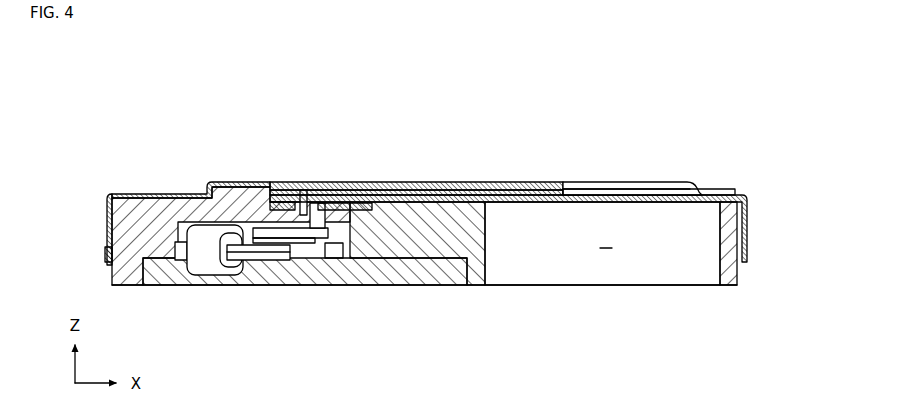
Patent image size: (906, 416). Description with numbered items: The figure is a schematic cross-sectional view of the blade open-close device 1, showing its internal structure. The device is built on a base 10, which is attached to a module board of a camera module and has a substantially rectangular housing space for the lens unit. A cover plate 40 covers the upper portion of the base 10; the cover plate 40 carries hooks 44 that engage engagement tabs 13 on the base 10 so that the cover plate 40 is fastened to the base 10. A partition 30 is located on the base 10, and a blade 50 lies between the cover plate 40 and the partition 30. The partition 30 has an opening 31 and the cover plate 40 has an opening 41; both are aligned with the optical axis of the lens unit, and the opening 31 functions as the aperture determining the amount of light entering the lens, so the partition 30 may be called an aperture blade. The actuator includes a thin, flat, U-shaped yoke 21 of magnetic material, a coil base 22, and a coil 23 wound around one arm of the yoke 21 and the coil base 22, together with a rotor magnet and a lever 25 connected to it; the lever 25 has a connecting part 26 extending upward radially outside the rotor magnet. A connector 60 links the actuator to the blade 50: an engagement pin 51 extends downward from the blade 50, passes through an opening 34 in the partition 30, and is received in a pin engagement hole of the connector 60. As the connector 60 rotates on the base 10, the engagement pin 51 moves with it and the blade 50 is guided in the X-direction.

The blade open-close device 1 is at (712, 108).
The base 10 is at (130, 285).
The engagement tab 13 is at (107, 228).
The yoke 21 is at (282, 256).
The coil base 22 is at (413, 278).
The coil 23 is at (202, 266).
The lever 25 is at (265, 232).
The connecting part 26 is at (322, 218).
The partition 30 is at (392, 188).
The opening 31 is at (618, 195).
The opening 34 is at (318, 197).
The cover plate 40 is at (148, 194).
The opening 41 is at (598, 182).
The hook 44 is at (107, 262).
The blade 50 is at (450, 190).
The engagement pin 51 is at (302, 192).
The connector 60 is at (347, 201).